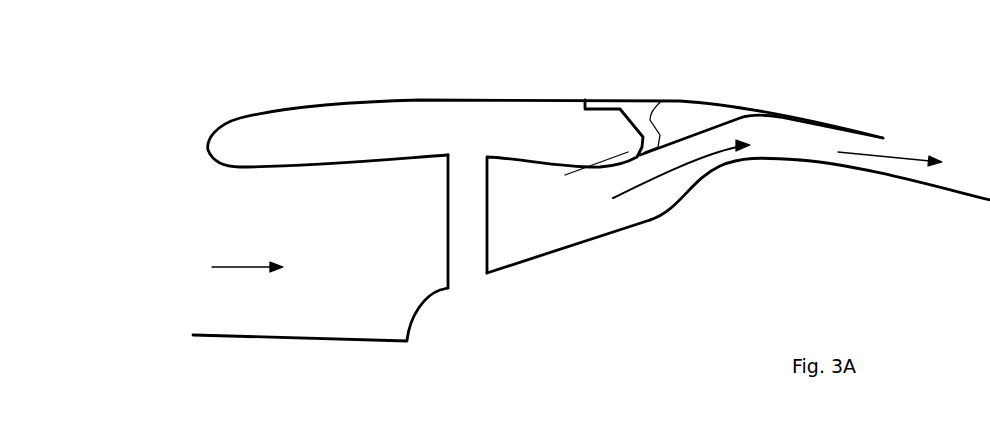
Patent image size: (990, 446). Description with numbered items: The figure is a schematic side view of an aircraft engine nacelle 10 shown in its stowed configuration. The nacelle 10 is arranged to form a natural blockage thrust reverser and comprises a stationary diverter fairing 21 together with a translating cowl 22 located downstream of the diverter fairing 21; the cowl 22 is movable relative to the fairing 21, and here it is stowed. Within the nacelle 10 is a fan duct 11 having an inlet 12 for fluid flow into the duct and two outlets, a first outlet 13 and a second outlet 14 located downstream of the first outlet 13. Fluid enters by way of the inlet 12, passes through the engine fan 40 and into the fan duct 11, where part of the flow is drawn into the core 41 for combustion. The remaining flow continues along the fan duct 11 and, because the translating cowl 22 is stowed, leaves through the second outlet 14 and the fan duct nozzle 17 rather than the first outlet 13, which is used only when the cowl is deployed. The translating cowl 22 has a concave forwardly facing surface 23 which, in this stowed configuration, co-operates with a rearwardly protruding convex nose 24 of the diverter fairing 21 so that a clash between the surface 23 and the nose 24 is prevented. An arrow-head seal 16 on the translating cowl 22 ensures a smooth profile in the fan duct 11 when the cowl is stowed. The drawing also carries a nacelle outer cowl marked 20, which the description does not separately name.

The aircraft engine nacelle 10 is at (190, 103).
The fan duct 11 is at (580, 230).
The inlet 12 is at (235, 304).
The first outlet 13 is at (588, 100).
The second outlet 14 is at (727, 150).
The arrow-head seal 16 is at (645, 152).
The fan duct nozzle 17 is at (848, 160).
The fan nacelle 20 is at (428, 132).
The stationary diverter fairing 21 is at (600, 144).
The translating cowl 22 is at (708, 116).
The concave forwardly facing surface 23 is at (660, 102).
The convex nose 24 is at (565, 175).
The engine fan 40 is at (473, 257).
The core 41 is at (585, 282).